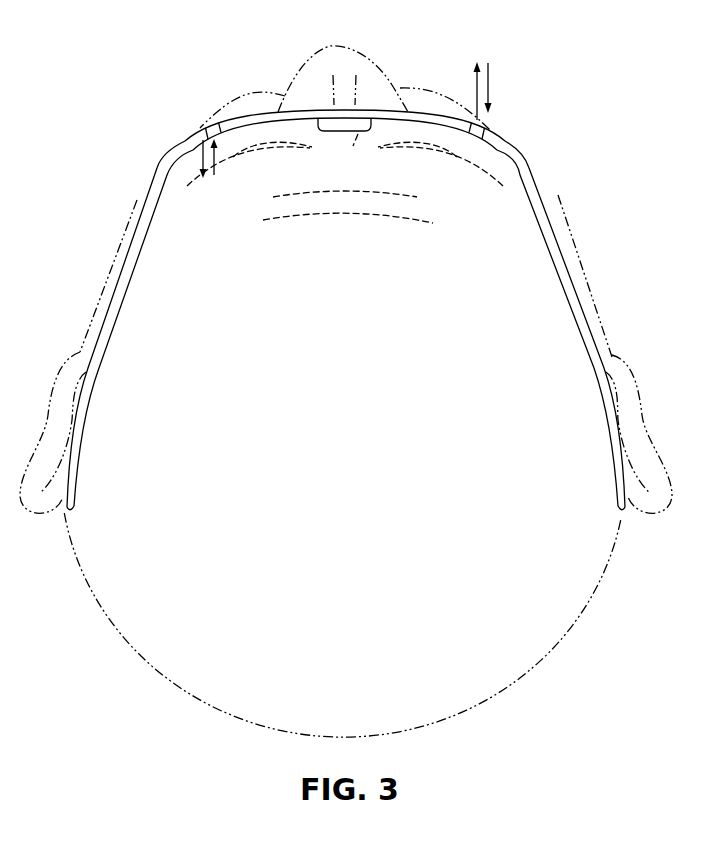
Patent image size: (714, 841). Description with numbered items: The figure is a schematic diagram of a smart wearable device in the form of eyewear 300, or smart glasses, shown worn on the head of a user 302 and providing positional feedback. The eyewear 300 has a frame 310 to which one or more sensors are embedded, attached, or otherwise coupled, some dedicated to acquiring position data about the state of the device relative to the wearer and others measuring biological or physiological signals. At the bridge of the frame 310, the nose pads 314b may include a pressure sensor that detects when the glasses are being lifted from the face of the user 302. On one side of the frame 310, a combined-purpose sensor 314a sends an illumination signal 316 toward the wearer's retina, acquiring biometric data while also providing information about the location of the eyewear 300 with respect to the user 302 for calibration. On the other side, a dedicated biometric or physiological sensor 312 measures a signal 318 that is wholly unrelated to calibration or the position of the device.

The eyewear 300 is at (170, 66).
The user 302 is at (562, 229).
The frame 310 is at (531, 172).
The sensor 312 is at (486, 128).
The sensor 314a is at (208, 127).
The nose pads 314b is at (336, 131).
The illumination signal 316 is at (200, 147).
The signal 318 is at (493, 77).